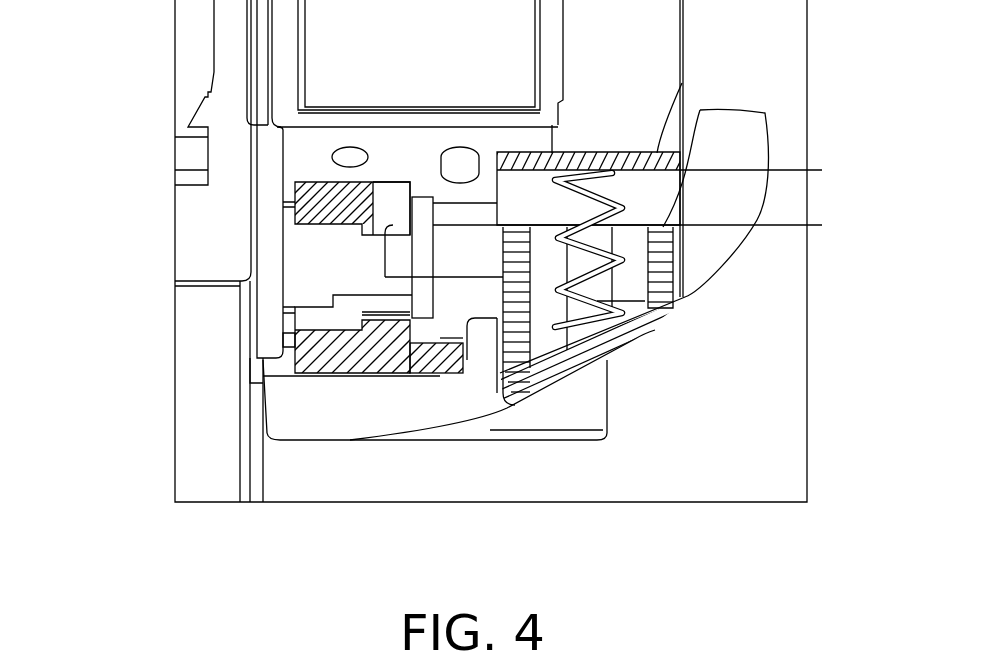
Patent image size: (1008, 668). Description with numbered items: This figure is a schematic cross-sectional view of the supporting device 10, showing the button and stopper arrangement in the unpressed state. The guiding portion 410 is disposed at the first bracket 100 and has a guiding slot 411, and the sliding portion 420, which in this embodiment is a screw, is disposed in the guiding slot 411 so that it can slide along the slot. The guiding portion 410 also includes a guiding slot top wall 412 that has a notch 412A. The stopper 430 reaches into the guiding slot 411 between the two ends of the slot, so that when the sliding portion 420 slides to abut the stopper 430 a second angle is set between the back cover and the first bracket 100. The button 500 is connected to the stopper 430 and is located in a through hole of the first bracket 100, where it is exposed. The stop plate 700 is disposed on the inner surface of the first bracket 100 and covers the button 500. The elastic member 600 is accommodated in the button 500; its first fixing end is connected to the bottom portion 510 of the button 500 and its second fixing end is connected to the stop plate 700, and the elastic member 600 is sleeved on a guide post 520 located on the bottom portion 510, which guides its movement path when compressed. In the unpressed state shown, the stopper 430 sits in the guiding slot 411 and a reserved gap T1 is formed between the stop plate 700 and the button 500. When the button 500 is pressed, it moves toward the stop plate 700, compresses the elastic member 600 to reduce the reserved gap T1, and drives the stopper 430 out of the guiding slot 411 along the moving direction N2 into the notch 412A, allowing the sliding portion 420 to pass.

The supporting device 10 is at (860, 554).
The first bracket 100 is at (319, 425).
The guiding portion 410 is at (246, 375).
The guiding slot 411 is at (357, 255).
The guiding slot top wall 412 is at (315, 203).
The notch 412A is at (398, 190).
The sliding portion 420 is at (420, 218).
The stopper 430 is at (463, 257).
The button 500 is at (670, 278).
The bottom portion 510 is at (560, 350).
The guide post 520 is at (597, 301).
The elastic member 600 is at (618, 260).
The stop plate 700 is at (622, 157).
The reserved gap T1 is at (819, 173).
The moving direction N2 is at (751, 438).